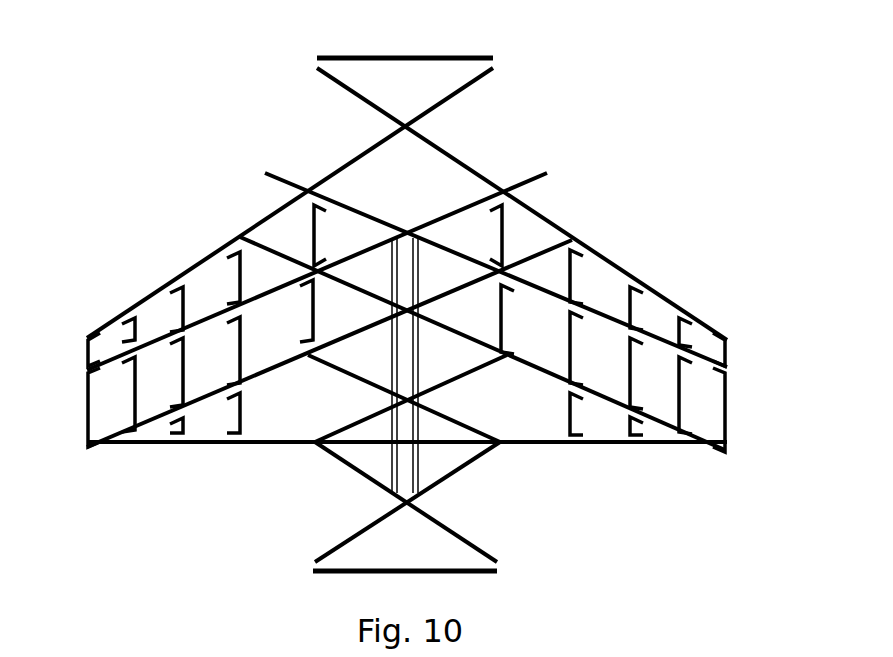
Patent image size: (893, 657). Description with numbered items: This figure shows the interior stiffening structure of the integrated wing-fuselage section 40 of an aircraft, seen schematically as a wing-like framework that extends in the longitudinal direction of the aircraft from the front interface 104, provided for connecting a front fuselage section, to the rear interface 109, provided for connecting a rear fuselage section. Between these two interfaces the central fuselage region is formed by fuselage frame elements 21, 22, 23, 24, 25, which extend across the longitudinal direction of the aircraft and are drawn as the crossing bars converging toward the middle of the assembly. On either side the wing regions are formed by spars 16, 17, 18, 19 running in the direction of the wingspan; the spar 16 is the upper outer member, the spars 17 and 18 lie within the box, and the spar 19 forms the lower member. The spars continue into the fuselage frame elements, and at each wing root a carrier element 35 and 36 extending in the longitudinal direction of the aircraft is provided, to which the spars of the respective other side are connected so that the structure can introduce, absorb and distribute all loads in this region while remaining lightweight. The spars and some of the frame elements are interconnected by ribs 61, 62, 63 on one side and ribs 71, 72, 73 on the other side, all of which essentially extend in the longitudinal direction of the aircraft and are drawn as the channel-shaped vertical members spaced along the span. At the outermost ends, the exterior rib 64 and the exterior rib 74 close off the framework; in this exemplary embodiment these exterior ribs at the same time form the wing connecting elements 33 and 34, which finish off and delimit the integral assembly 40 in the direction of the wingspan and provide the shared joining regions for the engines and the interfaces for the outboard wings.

The front interface 104 is at (478, 58).
The rear interface 109 is at (330, 572).
The wing-fuselage section 40 is at (232, 122).
The spar 16 is at (270, 213).
The fuselage frame element 21 is at (452, 157).
The fuselage frame element 22 is at (368, 215).
The spar 17 is at (215, 308).
The fuselage frame element 23 is at (355, 287).
The spar 18 is at (150, 432).
The fuselage frame element 24 is at (353, 373).
The fuselage frame element 25 is at (352, 468).
The spar 19 is at (233, 445).
The exterior rib 64 is at (60, 390).
The wing connecting element 33 is at (87, 418).
The exterior rib 74 is at (756, 368).
The wing connecting element 34 is at (728, 397).
The rib 63 is at (133, 393).
The rib 62 is at (180, 378).
The rib 61 is at (236, 345).
The carrier element 35 is at (312, 314).
The carrier element 36 is at (502, 307).
The rib 71 is at (575, 340).
The rib 72 is at (630, 358).
The rib 73 is at (683, 390).